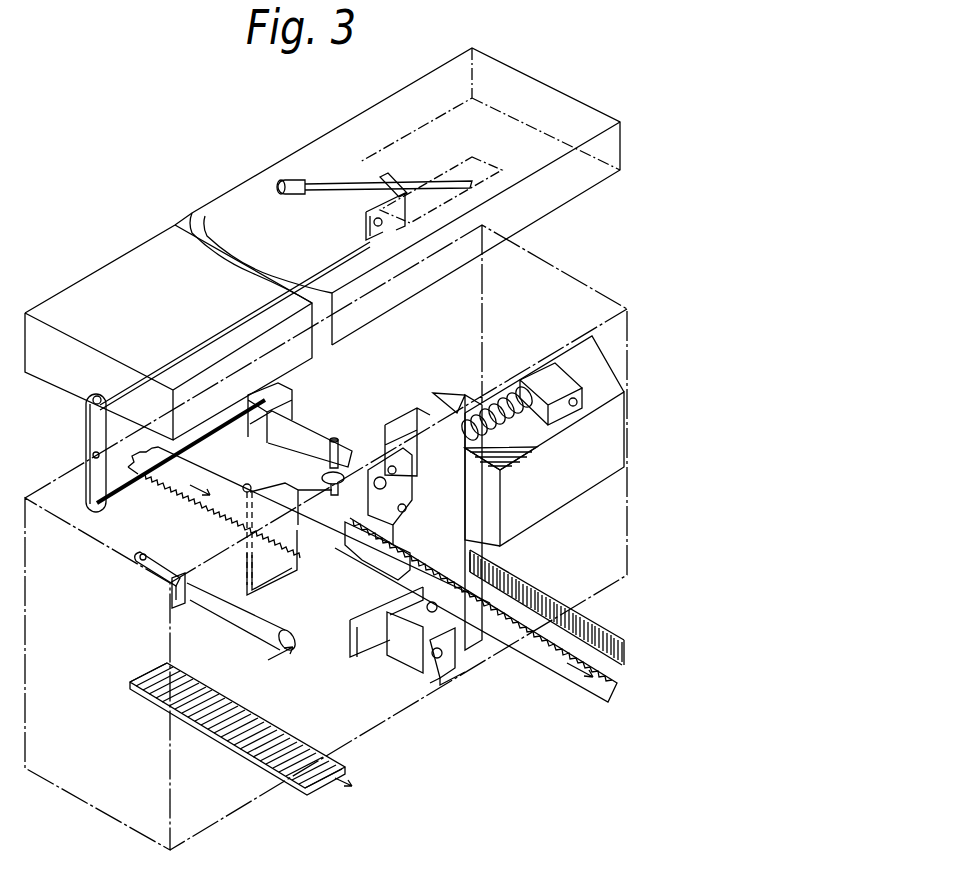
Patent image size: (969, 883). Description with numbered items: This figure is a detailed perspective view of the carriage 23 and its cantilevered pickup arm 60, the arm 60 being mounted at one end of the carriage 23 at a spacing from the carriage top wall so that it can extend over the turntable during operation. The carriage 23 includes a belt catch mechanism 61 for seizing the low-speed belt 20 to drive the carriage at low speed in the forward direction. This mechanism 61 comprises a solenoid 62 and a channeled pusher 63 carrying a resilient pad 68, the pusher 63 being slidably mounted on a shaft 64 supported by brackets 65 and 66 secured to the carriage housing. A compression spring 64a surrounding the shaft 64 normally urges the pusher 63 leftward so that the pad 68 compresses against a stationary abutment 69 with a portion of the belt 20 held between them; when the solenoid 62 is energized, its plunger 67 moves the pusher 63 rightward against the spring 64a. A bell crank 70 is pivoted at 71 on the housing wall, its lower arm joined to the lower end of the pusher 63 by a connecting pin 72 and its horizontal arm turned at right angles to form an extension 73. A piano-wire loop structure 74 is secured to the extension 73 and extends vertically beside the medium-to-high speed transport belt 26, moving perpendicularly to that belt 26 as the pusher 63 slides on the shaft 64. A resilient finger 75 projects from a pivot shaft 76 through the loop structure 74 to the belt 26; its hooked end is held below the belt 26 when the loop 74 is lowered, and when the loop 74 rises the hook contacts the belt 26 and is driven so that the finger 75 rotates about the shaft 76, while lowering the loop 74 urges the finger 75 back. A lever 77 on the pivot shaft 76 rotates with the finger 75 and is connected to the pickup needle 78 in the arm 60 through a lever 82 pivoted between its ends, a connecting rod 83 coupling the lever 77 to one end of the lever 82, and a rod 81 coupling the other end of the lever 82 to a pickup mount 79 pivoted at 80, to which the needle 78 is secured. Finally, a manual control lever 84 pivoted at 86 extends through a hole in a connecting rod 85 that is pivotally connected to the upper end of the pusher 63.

The low-speed belt 20 is at (508, 633).
The carriage 23 is at (95, 805).
The medium-to-high speed transport belt 26 is at (214, 522).
The pickup arm 60 is at (598, 112).
The belt catch mechanism 61 is at (460, 371).
The solenoid 62 is at (606, 487).
The pusher 63 is at (395, 423).
The shaft 64 is at (495, 394).
The compression spring 64a is at (530, 436).
The bracket 65 is at (560, 372).
The bracket 66 is at (415, 498).
The plunger 67 is at (492, 488).
The pad 68 is at (415, 530).
The stationary abutment 69 is at (395, 658).
The bell crank 70 is at (352, 660).
The pivot 71 is at (458, 650).
The connecting pin 72 is at (442, 682).
The extension 73 is at (326, 600).
The loop structure 74 is at (246, 486).
The resilient finger 75 is at (300, 488).
The pivot shaft 76 is at (333, 440).
The lever 77 is at (286, 402).
The pickup needle 78 is at (418, 184).
The pickup mount 79 is at (372, 215).
The pivot 80 is at (383, 222).
The rod 81 is at (212, 338).
The lever 82 is at (86, 432).
The connecting rod 83 is at (122, 484).
The manual control lever 84 is at (238, 620).
The connecting rod 85 is at (172, 604).
The pivot 86 is at (143, 557).